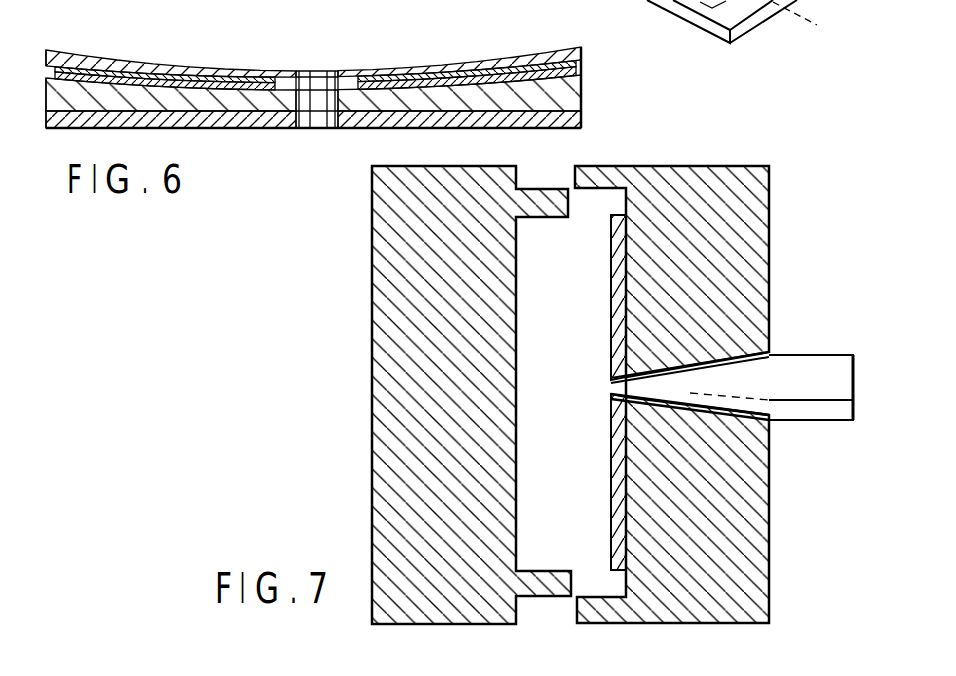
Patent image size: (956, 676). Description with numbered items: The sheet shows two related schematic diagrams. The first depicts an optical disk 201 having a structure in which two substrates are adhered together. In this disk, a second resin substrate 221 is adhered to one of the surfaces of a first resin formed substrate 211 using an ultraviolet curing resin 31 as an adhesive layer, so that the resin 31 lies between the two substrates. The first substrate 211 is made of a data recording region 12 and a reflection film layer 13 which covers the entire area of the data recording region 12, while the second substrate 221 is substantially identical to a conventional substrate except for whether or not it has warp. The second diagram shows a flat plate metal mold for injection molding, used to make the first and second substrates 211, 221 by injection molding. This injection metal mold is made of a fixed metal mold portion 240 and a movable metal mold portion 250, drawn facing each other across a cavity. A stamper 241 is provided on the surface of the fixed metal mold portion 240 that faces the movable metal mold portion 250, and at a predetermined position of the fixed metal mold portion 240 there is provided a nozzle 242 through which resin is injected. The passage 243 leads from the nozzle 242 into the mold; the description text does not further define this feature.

In FIG. 6, the optical disk 201 is at (513, 45).
In FIG. 6, the first resin formed substrate 211 is at (582, 50).
In FIG. 6, the data recording region 12 is at (582, 63).
In FIG. 6, the reflection film layer 13 is at (581, 74).
In FIG. 6, the ultraviolet curing resin 31 is at (573, 100).
In FIG. 6, the second resin substrate 221 is at (585, 120).
In FIG. 7, the fixed metal mold portion 240 is at (748, 267).
In FIG. 7, the stamper 241 is at (617, 302).
In FIG. 7, the nozzle 242 is at (813, 363).
In FIG. 7, the gate passage 243 is at (583, 475).
In FIG. 7, the movable metal mold portion 250 is at (403, 455).